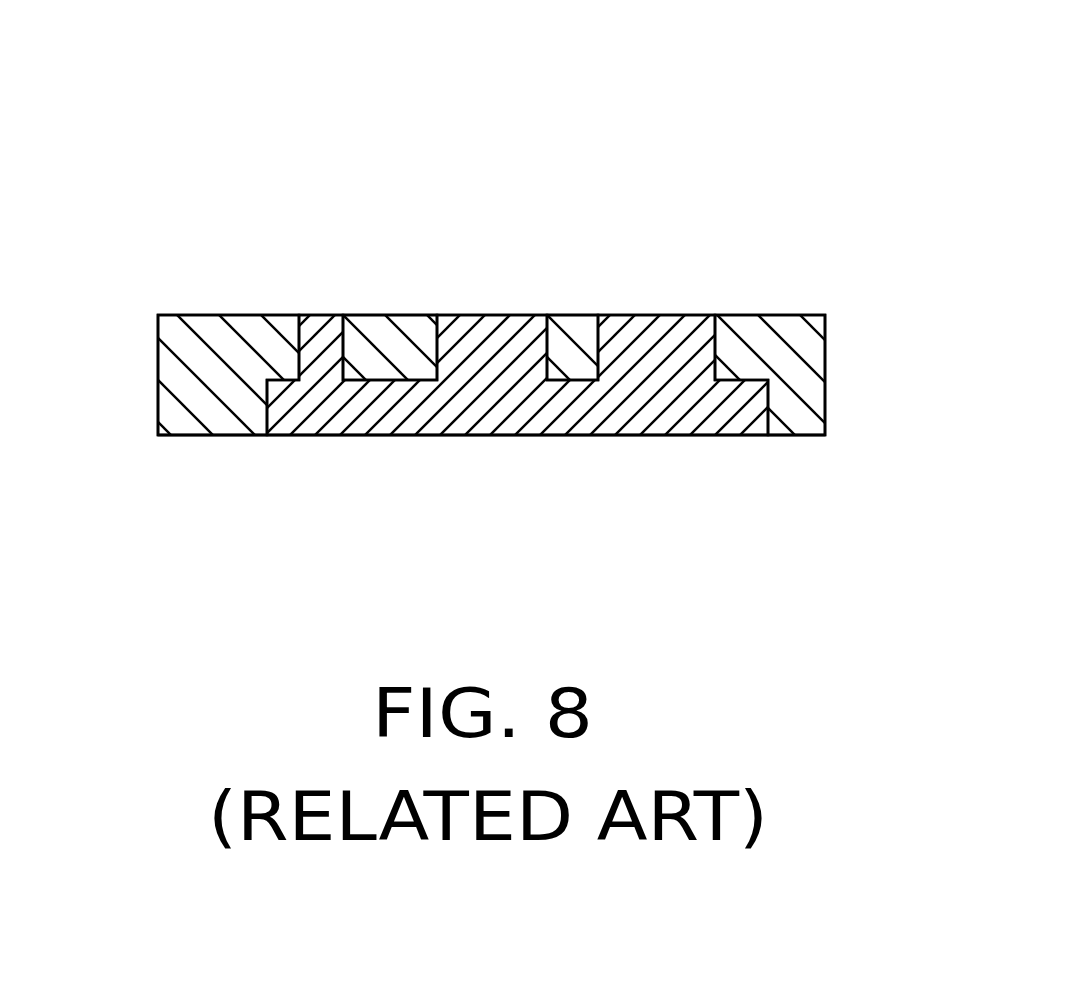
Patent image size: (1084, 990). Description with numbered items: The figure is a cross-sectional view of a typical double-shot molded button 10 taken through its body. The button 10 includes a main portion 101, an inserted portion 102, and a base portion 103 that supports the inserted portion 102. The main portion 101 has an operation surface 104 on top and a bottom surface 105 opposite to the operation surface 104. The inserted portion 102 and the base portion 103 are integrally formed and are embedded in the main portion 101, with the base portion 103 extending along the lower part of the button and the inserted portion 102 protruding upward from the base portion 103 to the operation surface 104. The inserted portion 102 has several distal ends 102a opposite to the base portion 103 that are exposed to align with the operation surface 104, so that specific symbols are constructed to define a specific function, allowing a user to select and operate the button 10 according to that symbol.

The double-shot molded button 10 is at (490, 98).
The main portion 101 is at (817, 363).
The inserted portion 102 is at (657, 348).
The distal ends 102a is at (386, 300).
The base portion 103 is at (643, 420).
The operation surface 104 is at (201, 300).
The bottom surface 105 is at (220, 450).